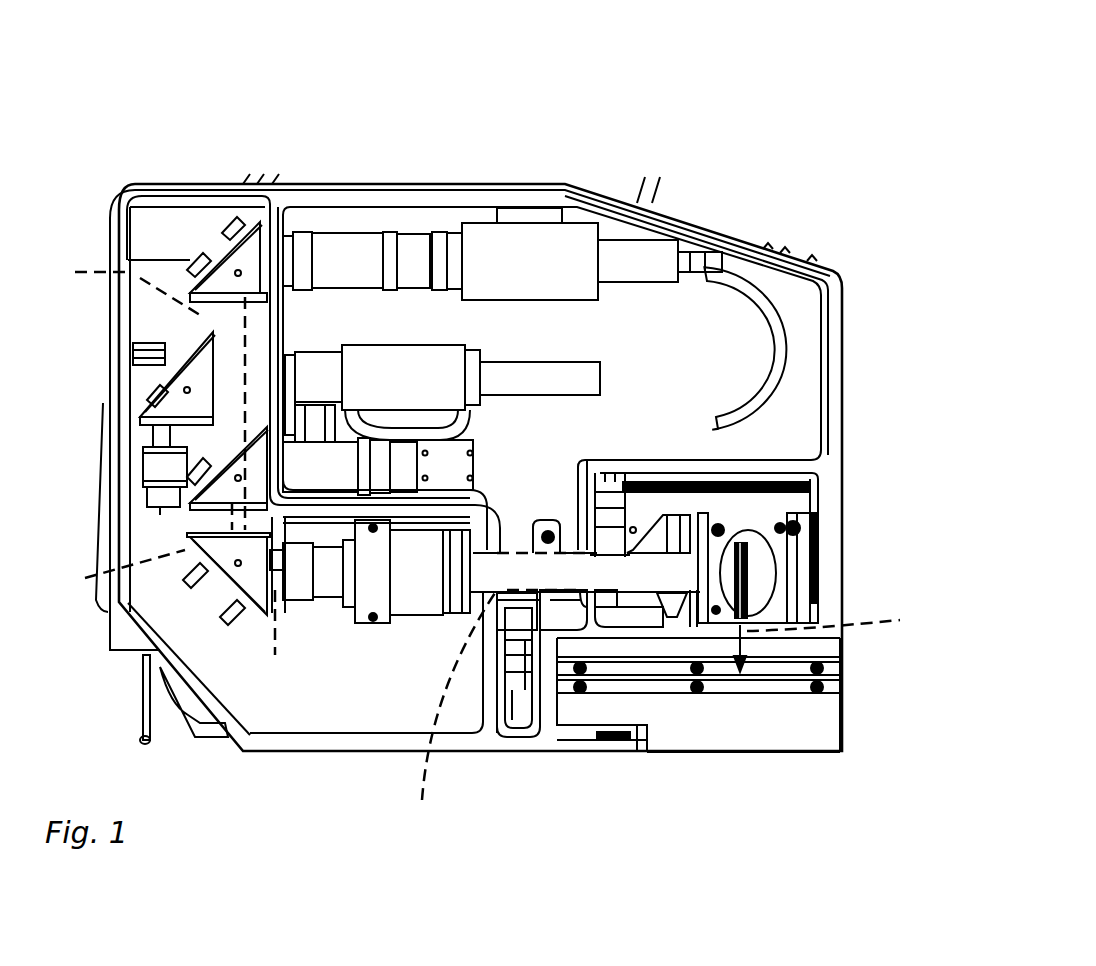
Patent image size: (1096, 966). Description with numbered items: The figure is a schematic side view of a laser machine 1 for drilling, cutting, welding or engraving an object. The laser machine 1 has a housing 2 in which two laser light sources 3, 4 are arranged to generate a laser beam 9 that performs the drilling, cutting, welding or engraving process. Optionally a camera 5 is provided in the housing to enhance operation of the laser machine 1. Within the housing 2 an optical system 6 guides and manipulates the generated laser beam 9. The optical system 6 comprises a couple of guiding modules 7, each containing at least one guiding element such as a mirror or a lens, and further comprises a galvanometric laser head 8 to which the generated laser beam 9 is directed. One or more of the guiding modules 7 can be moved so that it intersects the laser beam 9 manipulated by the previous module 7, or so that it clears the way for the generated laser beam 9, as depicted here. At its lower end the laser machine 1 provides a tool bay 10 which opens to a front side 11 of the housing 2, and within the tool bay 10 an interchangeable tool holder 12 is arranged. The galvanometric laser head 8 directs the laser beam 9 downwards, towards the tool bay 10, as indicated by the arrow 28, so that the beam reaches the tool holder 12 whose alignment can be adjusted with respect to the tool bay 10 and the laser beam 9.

The laser machine 1 is at (700, 83).
The housing 2 is at (690, 238).
The laser light source 3 is at (362, 245).
The laser light source 4 is at (355, 365).
The camera 5 is at (450, 460).
The optical system 6 is at (190, 242).
The guiding module 7 is at (175, 336).
The galvanometric laser head 8 is at (752, 578).
The laser beam 9 is at (487, 545).
The tool bay 10 is at (565, 742).
The front side 11 is at (845, 604).
The interchangeable tool holder 12 is at (728, 740).
The arrow 28 is at (745, 641).